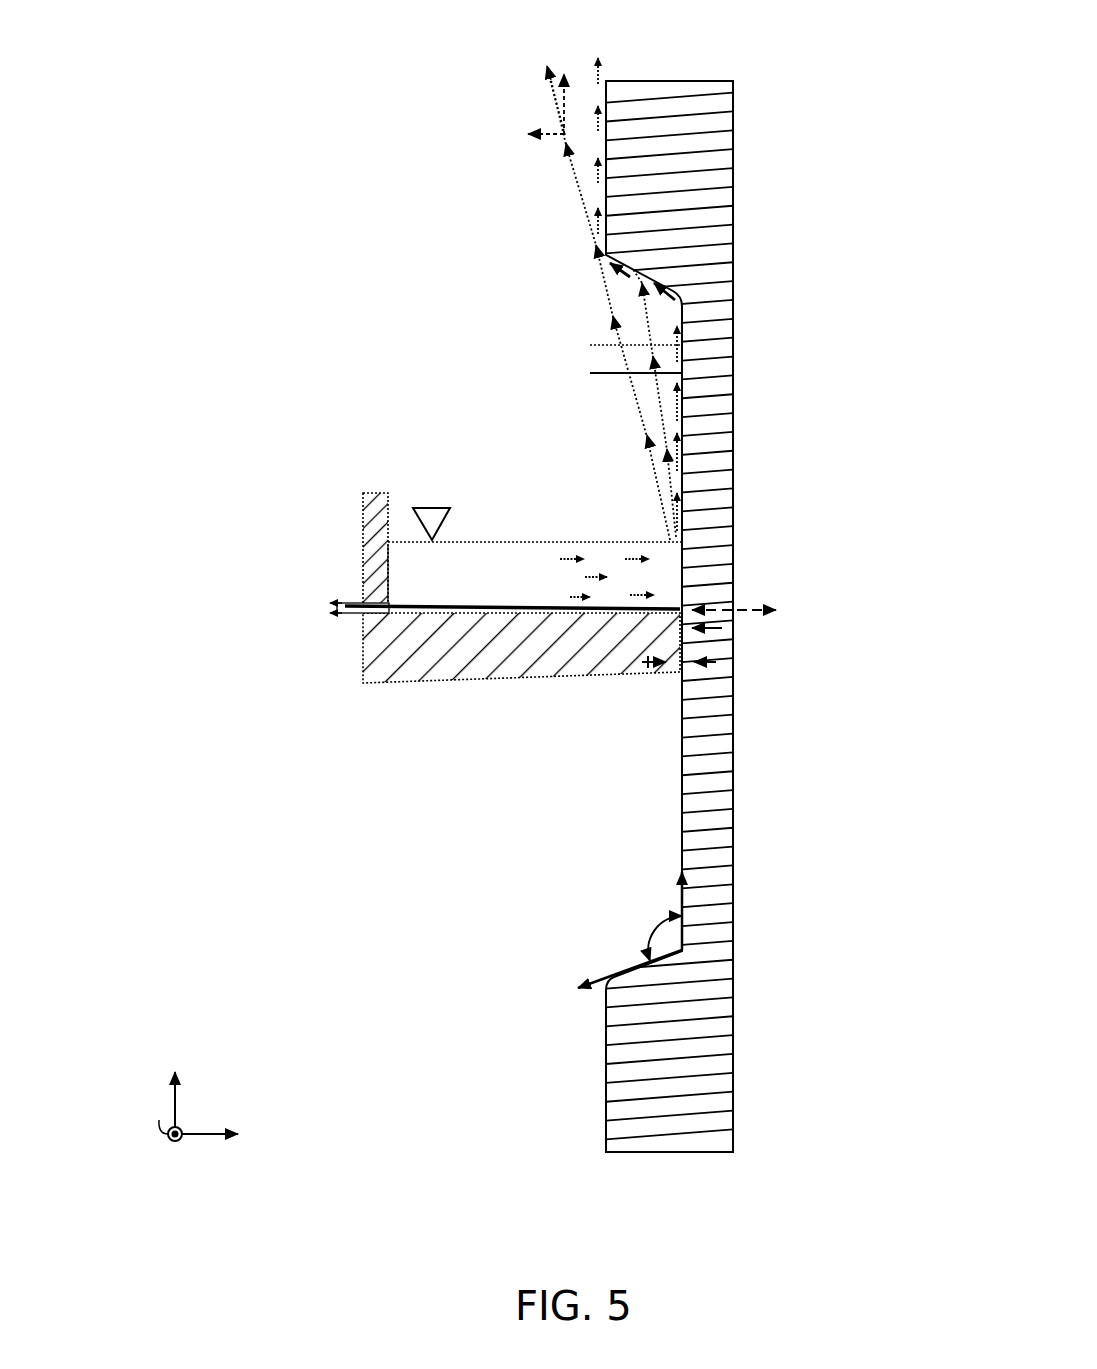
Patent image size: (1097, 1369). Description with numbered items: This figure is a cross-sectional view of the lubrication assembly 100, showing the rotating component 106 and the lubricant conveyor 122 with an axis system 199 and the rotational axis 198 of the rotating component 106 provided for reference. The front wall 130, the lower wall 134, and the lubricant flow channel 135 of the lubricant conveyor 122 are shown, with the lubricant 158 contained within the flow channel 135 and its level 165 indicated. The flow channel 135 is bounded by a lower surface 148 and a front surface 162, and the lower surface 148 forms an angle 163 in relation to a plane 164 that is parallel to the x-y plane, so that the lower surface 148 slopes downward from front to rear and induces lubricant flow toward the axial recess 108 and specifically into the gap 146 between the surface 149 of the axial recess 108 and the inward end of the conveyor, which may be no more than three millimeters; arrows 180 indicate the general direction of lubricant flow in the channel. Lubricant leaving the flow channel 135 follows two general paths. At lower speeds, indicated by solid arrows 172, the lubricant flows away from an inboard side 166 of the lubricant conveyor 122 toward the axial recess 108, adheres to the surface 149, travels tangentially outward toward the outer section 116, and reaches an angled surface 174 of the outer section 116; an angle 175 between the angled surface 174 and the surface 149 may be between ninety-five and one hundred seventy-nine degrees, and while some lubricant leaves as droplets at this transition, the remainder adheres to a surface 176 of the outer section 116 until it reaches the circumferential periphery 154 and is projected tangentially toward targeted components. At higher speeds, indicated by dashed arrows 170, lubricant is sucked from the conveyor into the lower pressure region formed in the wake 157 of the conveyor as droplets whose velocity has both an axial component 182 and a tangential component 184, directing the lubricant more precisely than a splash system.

The lubrication assembly 100 is at (207, 103).
The rotating component 106 is at (645, 580).
The axial recess 108 is at (638, 800).
The outer section 116 is at (546, 1047).
The lubricant conveyor 122 is at (460, 602).
The front wall 130 is at (338, 562).
The lower wall 134 is at (474, 708).
The lubricant flow channel 135 is at (555, 538).
The gap 146 is at (648, 669).
The lower surface 148 is at (522, 604).
The surface 149 is at (614, 374).
The circumferential periphery 154 is at (673, 81).
The wake 157 is at (644, 506).
The lubricant 158 is at (478, 590).
The front surface 162 is at (390, 553).
The angle 163 is at (334, 609).
The plane 164 is at (348, 615).
The level 165 is at (433, 505).
The inboard side 166 is at (722, 628).
The dashed arrows 170 is at (554, 105).
The solid arrows 172 is at (615, 346).
The angled surface 174 is at (632, 963).
The angle 175 is at (658, 934).
The surface 176 is at (608, 145).
The arrows 180 is at (572, 557).
The axial component 182 is at (536, 130).
The tangential component 184 is at (562, 82).
The rotational axis 198 is at (701, 608).
The axis system 199 is at (247, 1087).